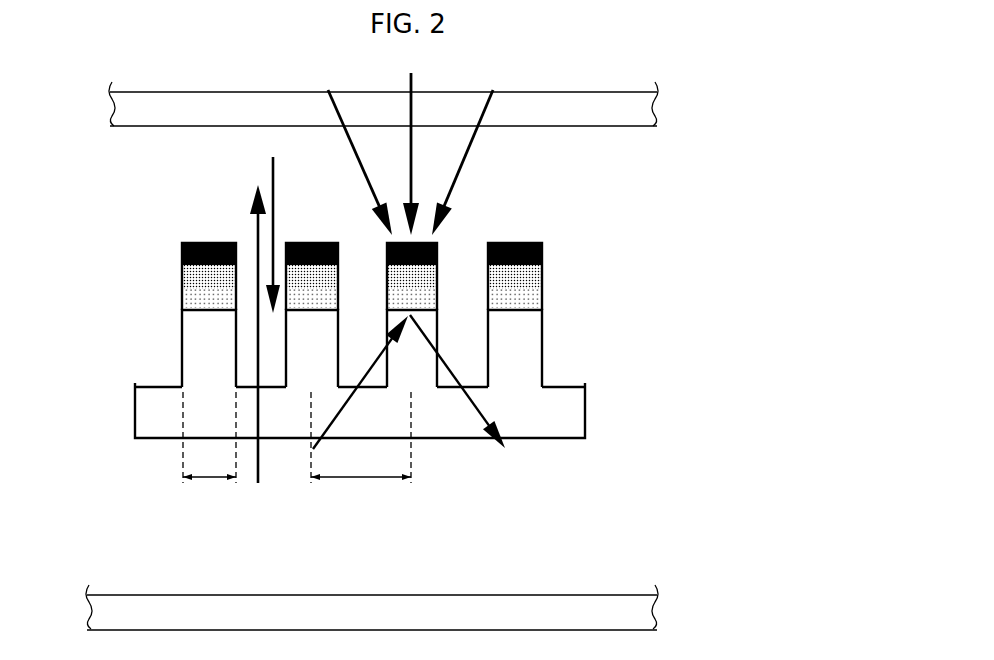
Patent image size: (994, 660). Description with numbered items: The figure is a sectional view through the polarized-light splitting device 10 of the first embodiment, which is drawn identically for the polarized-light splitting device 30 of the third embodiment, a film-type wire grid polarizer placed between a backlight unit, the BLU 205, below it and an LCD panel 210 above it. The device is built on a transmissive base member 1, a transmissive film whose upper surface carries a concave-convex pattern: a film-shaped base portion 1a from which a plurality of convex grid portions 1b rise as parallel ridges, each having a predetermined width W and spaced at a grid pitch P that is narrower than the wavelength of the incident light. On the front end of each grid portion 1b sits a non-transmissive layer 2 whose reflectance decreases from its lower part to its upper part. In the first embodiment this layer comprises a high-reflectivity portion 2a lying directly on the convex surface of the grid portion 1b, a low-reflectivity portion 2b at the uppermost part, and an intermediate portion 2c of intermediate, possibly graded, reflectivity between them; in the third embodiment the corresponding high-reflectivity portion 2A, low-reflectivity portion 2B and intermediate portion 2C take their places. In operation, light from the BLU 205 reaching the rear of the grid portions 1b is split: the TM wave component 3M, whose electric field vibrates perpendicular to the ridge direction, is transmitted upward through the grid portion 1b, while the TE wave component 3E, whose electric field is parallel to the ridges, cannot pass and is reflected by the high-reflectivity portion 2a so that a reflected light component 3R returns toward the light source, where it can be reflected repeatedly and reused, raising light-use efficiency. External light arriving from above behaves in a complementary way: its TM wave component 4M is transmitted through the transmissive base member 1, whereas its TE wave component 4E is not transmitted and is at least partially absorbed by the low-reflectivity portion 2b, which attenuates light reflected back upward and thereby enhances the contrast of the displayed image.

The LCD panel 210 is at (660, 110).
The BLU 205 is at (648, 612).
The polarized-light splitting device 10 is at (412, 305).
The polarized-light splitting device 30 is at (157, 195).
The transmissive base member 1 is at (419, 374).
The base portion 1a is at (578, 421).
The grid portion 1b is at (535, 353).
The non-transmissive layer 2 is at (468, 275).
The high-reflectivity portion 2a is at (423, 278).
The high-reflectivity portion 2A is at (542, 311).
The low-reflectivity portion 2b is at (424, 249).
The low-reflectivity portion 2B is at (542, 250).
The intermediate portion 2c is at (423, 285).
The intermediate portion 2C is at (542, 277).
The TM wave component 3M is at (258, 472).
The TE wave component 3E is at (312, 448).
The reflected light component 3R is at (494, 440).
The TM wave component 4M is at (276, 182).
The TE wave component 4E is at (498, 130).
The width W is at (209, 437).
The pitch P is at (361, 437).